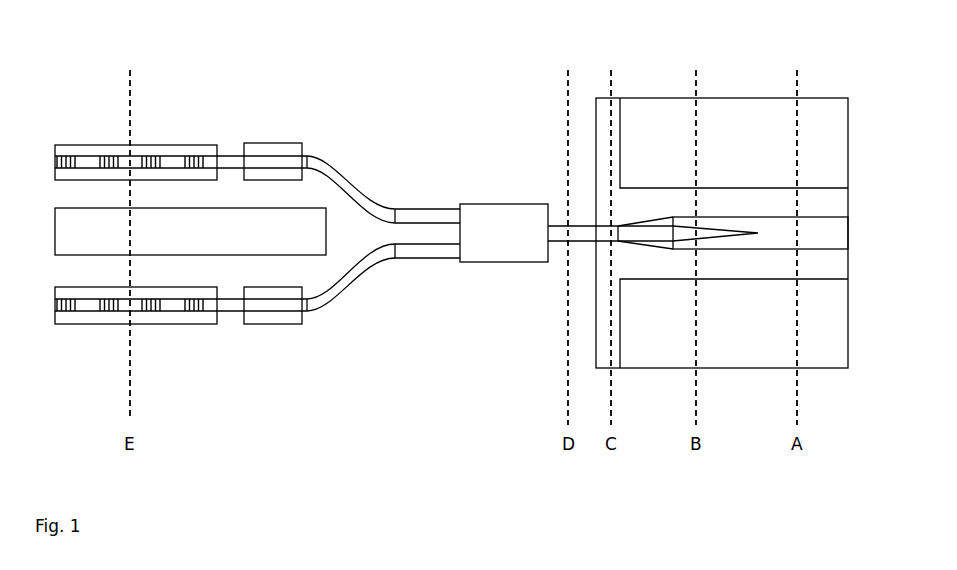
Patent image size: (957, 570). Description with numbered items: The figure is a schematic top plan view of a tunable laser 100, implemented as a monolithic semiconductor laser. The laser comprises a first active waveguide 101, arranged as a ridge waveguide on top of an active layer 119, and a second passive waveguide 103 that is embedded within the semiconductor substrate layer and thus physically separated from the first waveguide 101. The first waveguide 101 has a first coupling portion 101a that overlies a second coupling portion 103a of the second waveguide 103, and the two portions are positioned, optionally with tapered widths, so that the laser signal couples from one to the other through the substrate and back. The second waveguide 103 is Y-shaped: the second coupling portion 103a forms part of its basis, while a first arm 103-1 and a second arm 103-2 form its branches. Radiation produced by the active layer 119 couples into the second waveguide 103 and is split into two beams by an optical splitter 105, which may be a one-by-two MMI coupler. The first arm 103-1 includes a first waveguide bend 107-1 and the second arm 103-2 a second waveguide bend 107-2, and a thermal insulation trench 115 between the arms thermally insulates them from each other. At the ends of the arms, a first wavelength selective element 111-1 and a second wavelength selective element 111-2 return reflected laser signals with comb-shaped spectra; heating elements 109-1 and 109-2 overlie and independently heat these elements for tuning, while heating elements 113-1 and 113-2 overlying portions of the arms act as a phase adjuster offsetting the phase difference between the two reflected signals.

The tunable laser 100 is at (381, 423).
The first active waveguide 101 is at (823, 235).
The first coupling portion 101a is at (667, 217).
The second passive waveguide 103 is at (567, 240).
The second coupling portion 103a is at (725, 236).
The first arm 103-1 is at (233, 152).
The second arm 103-2 is at (233, 325).
The optical splitter 105 is at (500, 204).
The first waveguide bend 107-1 is at (355, 183).
The second waveguide bend 107-2 is at (352, 284).
The heating element 109-1 is at (90, 143).
The heating element 109-2 is at (90, 325).
The first wavelength selective element 111-1 is at (156, 144).
The second wavelength selective element 111-2 is at (163, 325).
The heating element 113-1 is at (291, 143).
The heating element 113-2 is at (288, 325).
The thermal insulation trench 115 is at (190, 231).
The active layer 119 is at (603, 112).